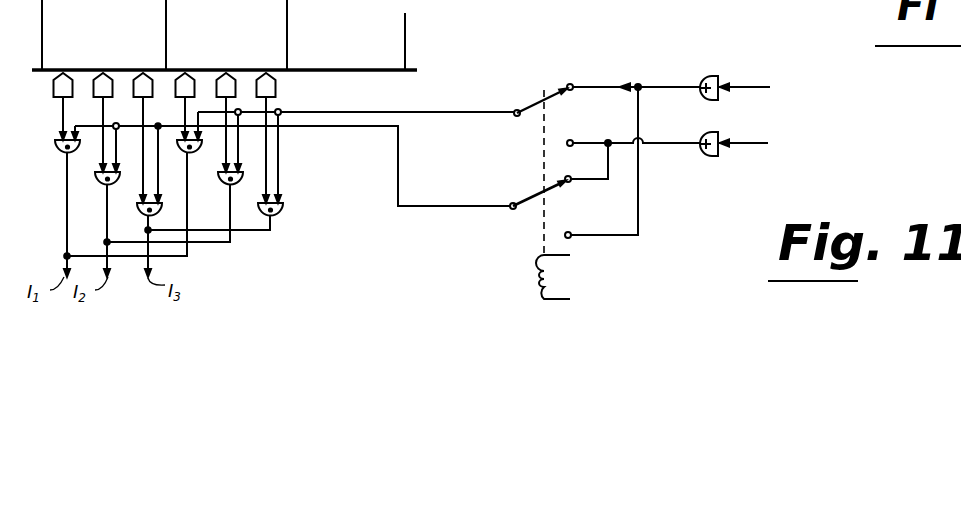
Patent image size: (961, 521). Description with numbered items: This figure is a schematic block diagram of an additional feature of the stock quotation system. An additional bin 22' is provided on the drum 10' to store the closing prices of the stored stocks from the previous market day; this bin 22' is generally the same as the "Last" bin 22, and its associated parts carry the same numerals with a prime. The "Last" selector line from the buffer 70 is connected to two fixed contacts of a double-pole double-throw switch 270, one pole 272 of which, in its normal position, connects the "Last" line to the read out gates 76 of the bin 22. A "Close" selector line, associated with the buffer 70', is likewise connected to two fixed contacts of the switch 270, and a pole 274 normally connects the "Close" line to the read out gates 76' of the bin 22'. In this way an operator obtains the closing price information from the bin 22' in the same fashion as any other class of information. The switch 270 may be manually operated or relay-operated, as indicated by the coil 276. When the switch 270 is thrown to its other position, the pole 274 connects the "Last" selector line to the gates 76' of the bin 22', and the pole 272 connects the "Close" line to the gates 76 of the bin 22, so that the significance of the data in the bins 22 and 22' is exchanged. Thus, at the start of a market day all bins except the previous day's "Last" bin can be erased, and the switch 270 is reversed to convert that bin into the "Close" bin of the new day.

The "Last" bin 22 is at (104, 35).
The additional bin 22' is at (240, 35).
The drum 10' is at (242, 41).
The read out gates 76 is at (108, 187).
The read out gates 76' is at (175, 176).
The double-pole double-throw switch 270 is at (602, 70).
The pole 274 is at (562, 94).
The pole 272 is at (560, 186).
The coil 276 is at (568, 274).
The buffer 70 is at (739, 160).
The buffer 70' is at (742, 78).